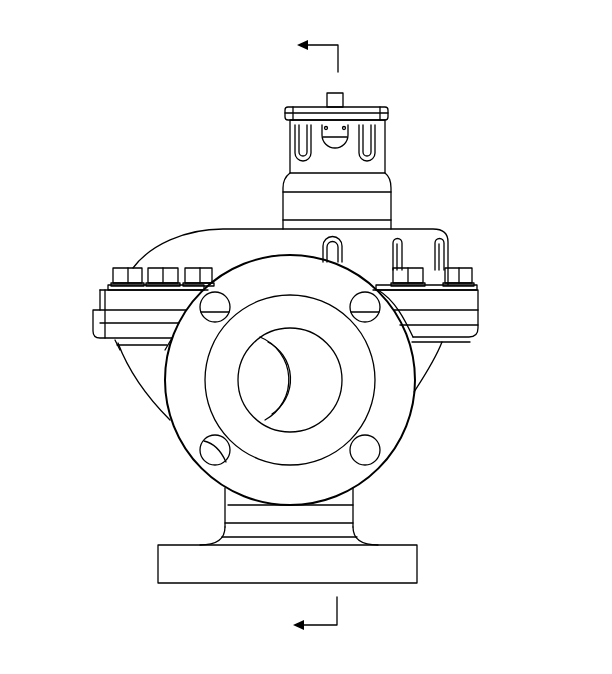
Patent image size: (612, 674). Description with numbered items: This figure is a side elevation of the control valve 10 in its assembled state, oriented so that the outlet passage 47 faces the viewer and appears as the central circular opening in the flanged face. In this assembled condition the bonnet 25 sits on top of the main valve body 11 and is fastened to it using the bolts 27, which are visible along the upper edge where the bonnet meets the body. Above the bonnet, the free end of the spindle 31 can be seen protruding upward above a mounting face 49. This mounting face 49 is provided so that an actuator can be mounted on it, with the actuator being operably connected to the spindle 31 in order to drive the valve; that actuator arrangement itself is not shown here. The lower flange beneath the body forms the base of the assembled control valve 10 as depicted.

The control valve 10 is at (295, 336).
The main valve body 11 is at (127, 375).
The bonnet 25 is at (133, 268).
The bolts 27 is at (470, 278).
The spindle 31 is at (340, 101).
The outlet passage 47 is at (312, 383).
The mounting face 49 is at (298, 106).